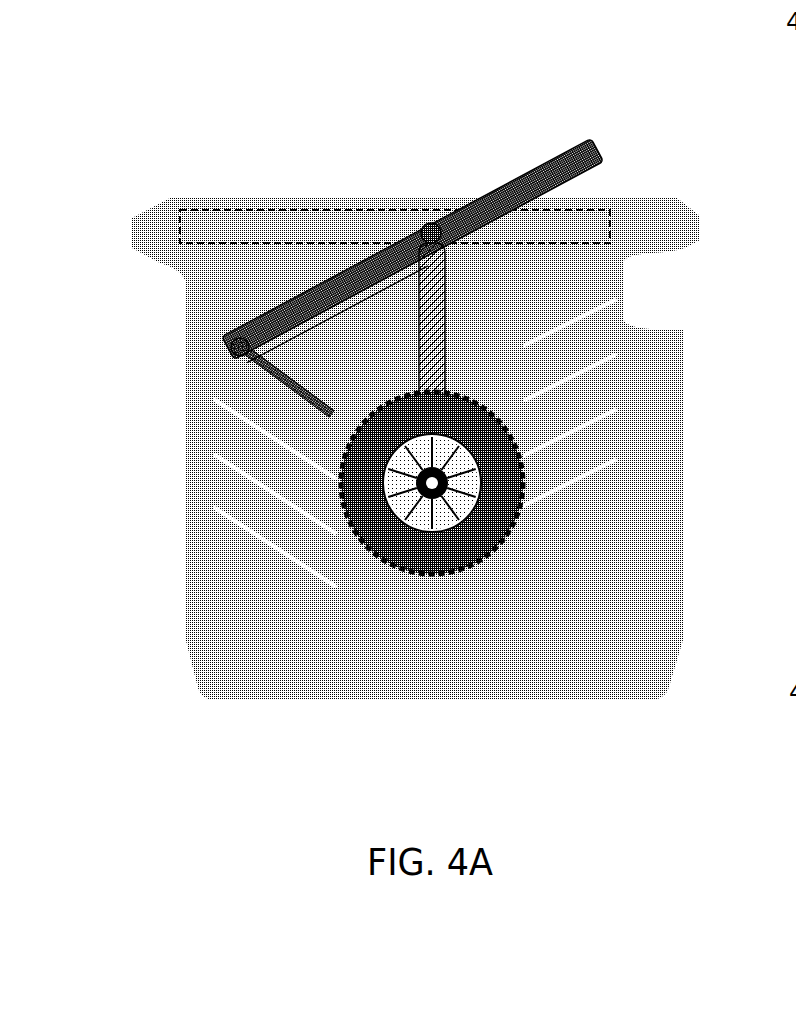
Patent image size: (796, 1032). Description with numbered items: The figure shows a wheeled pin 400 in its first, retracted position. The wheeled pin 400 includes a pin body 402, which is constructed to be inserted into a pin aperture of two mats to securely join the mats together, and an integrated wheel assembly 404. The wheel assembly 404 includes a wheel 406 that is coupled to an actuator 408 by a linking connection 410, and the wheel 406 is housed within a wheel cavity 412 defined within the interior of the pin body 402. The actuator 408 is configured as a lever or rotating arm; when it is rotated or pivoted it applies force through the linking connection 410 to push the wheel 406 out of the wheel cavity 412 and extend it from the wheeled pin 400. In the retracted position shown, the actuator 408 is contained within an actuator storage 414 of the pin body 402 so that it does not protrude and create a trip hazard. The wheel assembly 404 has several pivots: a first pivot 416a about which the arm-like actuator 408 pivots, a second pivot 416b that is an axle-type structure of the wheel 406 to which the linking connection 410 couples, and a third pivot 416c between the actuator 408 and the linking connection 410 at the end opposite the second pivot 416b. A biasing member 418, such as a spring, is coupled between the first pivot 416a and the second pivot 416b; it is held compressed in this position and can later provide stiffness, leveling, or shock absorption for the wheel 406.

The wheeled pin 400 is at (194, 86).
The pin body 402 is at (668, 453).
The wheel assembly 404 is at (406, 135).
The wheel 406 is at (437, 578).
The actuator 408 is at (586, 158).
The linking connection 410 is at (327, 413).
The wheel cavity 412 is at (530, 647).
The actuator storage 414 is at (600, 210).
The first pivot 416a is at (430, 230).
The second pivot 416b is at (513, 478).
The third pivot 416c is at (233, 355).
The biasing member 418 is at (430, 283).